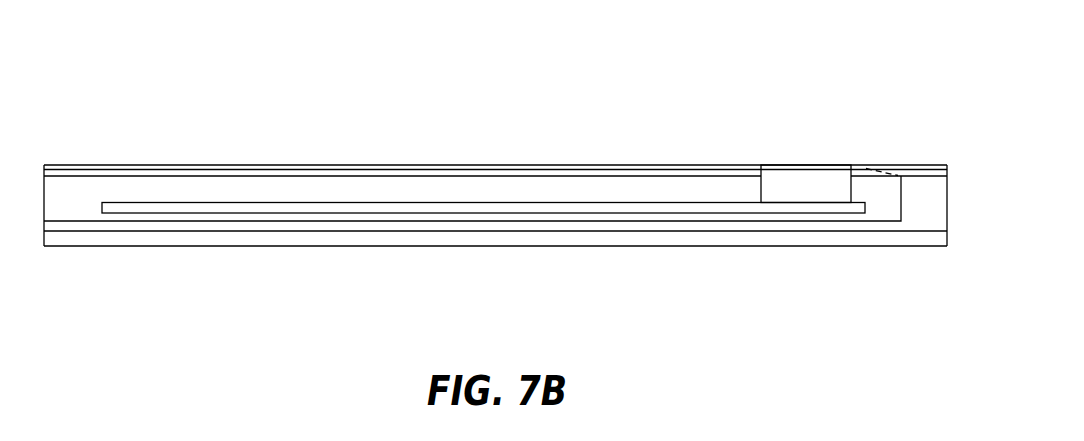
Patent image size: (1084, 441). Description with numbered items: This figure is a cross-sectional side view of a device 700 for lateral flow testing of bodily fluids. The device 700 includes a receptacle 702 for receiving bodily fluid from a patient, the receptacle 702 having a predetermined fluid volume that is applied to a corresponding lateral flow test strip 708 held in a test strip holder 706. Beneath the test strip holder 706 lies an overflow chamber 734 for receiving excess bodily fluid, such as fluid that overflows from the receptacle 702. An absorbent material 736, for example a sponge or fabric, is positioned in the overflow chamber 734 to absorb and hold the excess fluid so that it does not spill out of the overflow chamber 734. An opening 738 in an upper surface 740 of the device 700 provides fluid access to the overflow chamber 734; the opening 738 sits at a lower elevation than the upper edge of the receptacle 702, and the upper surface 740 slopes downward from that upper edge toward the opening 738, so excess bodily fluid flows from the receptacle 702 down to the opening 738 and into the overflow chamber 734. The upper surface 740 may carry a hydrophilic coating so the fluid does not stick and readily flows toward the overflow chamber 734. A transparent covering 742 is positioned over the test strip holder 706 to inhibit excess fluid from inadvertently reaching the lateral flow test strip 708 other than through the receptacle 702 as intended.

The device 700 is at (221, 80).
The receptacle 702 is at (799, 178).
The test strip holder 706 is at (151, 188).
The lateral flow test strip 708 is at (288, 213).
The overflow chamber 734 is at (428, 230).
The absorbent material 736 is at (507, 240).
The opening 738 is at (924, 159).
The upper surface 740 is at (888, 170).
The transparent covering 742 is at (362, 165).